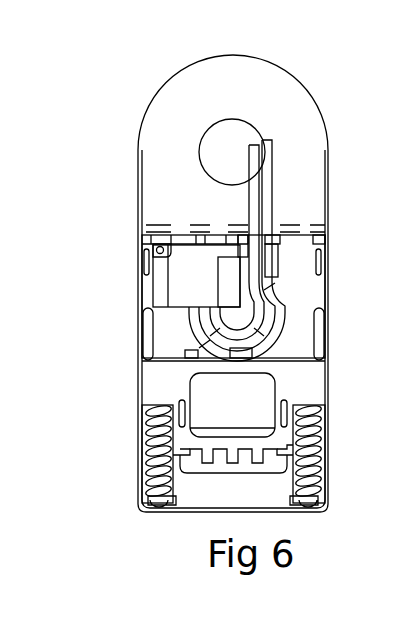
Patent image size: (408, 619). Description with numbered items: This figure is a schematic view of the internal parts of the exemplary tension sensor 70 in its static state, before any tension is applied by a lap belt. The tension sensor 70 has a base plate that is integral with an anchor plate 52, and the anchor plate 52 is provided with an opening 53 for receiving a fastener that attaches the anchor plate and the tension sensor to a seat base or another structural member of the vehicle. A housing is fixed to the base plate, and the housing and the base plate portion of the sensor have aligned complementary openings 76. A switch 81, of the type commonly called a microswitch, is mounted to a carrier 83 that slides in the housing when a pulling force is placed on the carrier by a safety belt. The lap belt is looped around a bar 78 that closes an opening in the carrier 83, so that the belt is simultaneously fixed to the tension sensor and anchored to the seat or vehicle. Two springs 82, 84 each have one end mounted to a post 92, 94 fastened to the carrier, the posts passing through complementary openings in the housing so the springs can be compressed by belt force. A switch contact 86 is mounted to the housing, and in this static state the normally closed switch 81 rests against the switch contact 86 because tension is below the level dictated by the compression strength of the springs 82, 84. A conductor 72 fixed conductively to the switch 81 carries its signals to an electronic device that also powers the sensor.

The anchor plate 52 is at (283, 80).
The opening 53 is at (213, 142).
The tension sensor 70 is at (142, 331).
The conductor 72 is at (263, 187).
The complementary openings 76 is at (253, 404).
The bar 78 is at (183, 465).
The switch 81 is at (185, 279).
The spring 82 is at (143, 440).
The carrier 83 is at (150, 378).
The spring 84 is at (317, 458).
The switch contact 86 is at (160, 228).
The post 92 is at (143, 412).
The post 94 is at (313, 408).